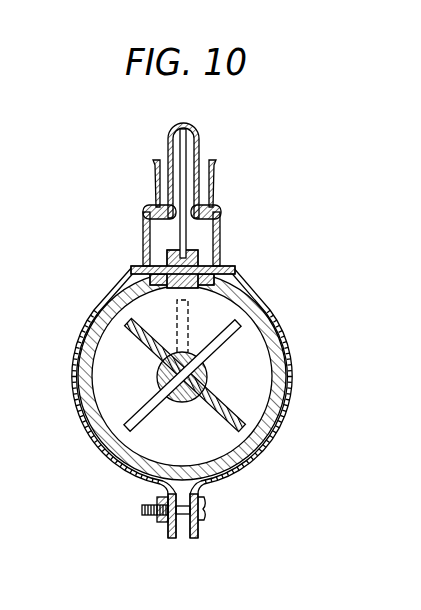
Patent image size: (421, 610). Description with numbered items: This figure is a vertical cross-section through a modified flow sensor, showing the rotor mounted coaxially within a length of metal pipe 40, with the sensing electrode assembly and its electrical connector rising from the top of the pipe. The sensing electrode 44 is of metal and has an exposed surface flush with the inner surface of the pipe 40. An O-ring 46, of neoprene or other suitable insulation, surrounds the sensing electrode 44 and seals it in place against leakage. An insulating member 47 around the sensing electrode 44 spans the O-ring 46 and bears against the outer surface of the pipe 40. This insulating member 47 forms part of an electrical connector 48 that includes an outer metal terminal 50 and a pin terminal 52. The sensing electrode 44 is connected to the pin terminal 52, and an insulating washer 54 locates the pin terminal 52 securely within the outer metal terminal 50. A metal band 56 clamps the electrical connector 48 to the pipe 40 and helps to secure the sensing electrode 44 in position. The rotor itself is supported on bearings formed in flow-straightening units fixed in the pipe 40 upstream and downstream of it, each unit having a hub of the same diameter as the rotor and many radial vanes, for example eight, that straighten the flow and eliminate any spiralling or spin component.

The metal pipe 40 is at (240, 294).
The metal band 56 is at (78, 408).
The O-ring 46 is at (162, 286).
The sensing electrode 44 is at (189, 250).
The insulating member 47 is at (214, 267).
The electrical connector 48 is at (132, 233).
The insulating washer 54 is at (203, 203).
The pin terminal 52 is at (199, 128).
The outer metal terminal 50 is at (160, 165).